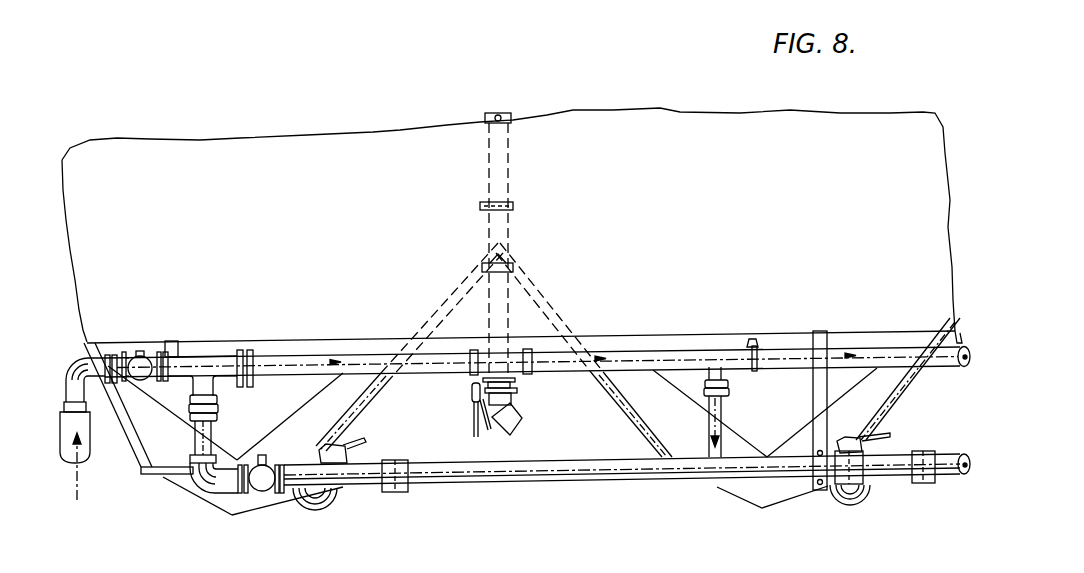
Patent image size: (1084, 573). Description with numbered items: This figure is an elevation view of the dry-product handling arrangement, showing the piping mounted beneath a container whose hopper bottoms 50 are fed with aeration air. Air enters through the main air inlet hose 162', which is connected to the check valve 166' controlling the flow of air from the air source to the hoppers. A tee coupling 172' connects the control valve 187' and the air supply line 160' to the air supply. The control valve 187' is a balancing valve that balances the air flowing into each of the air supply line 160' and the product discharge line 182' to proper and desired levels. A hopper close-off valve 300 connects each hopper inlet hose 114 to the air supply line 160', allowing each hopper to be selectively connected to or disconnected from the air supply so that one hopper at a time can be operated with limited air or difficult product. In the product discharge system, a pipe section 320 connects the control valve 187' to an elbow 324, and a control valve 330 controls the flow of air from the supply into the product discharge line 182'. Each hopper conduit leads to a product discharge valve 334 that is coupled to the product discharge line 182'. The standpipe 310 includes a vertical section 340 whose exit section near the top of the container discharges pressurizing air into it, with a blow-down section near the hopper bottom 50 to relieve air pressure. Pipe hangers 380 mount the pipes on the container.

The hopper bottom 50 is at (270, 418).
The air supply line 160' is at (537, 340).
The main air inlet hose 162' is at (96, 420).
The check valve 166' is at (143, 345).
The tee coupling 172' is at (211, 353).
The control valve 187' is at (177, 420).
The pipe section 320 is at (197, 446).
The elbow 324 is at (218, 484).
The control valve 330 is at (263, 492).
The product discharge valve 334 is at (325, 510).
The product discharge line 182' is at (627, 494).
The vertical section 340 is at (508, 180).
The standpipe 310 is at (513, 225).
The hopper close-off valve 300 is at (707, 378).
The air inlet hose 114 is at (713, 432).
The pipe hanger 380 is at (815, 470).